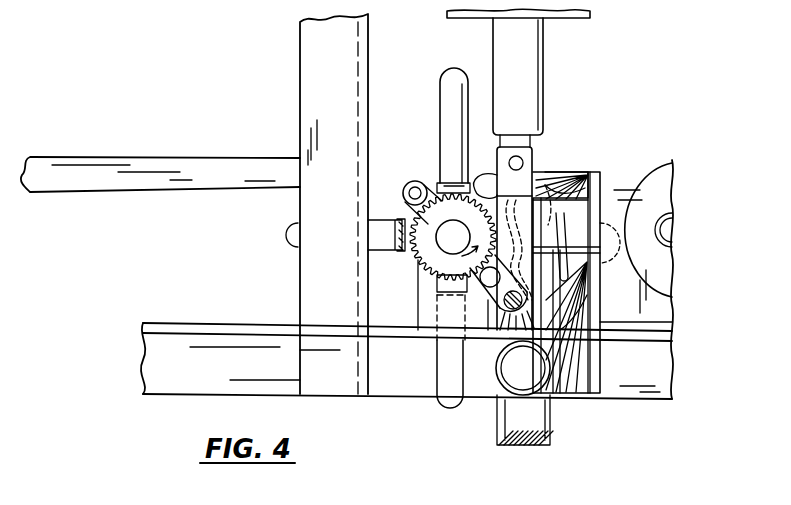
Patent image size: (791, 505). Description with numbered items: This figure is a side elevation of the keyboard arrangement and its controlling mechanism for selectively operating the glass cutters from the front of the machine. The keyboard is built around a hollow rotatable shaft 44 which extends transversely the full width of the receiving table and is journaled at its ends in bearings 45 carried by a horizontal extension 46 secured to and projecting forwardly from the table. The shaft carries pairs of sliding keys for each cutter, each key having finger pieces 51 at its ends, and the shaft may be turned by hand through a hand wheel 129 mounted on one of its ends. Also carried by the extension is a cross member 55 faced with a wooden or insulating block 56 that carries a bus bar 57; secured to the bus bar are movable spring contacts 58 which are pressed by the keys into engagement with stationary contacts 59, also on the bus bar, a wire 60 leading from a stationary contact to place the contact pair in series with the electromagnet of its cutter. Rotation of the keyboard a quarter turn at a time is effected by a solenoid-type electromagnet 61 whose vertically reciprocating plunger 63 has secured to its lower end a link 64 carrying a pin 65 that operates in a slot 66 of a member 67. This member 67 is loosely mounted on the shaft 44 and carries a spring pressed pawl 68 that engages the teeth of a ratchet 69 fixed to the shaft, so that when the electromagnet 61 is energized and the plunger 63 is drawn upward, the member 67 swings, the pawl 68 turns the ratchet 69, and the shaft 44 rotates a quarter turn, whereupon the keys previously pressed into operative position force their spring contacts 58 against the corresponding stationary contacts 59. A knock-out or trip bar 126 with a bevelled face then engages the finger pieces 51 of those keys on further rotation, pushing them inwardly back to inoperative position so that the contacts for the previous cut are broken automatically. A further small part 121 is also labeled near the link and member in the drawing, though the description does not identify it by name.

The hollow rotatable shaft 44 is at (453, 237).
The bearings 45 is at (422, 292).
The horizontal extension 46 is at (626, 384).
The finger pieces 51 is at (447, 198).
The cross member 55 is at (597, 203).
The insulating block 56 is at (572, 395).
The bus bar 57 is at (557, 235).
The movable spring contacts 58 is at (523, 200).
The stationary contacts 59 is at (548, 172).
The wire 60 is at (637, 172).
The electromagnet 61 is at (592, 15).
The plunger 63 is at (540, 92).
The link 64 is at (502, 173).
The pin 65 is at (512, 305).
The slot 66 is at (488, 296).
The member 67 is at (408, 254).
The spring pressed pawl 68 is at (418, 170).
The ratchet 69 is at (437, 275).
The cam 121 is at (500, 182).
The trip bar 126 is at (548, 200).
The hand wheel 129 is at (453, 103).